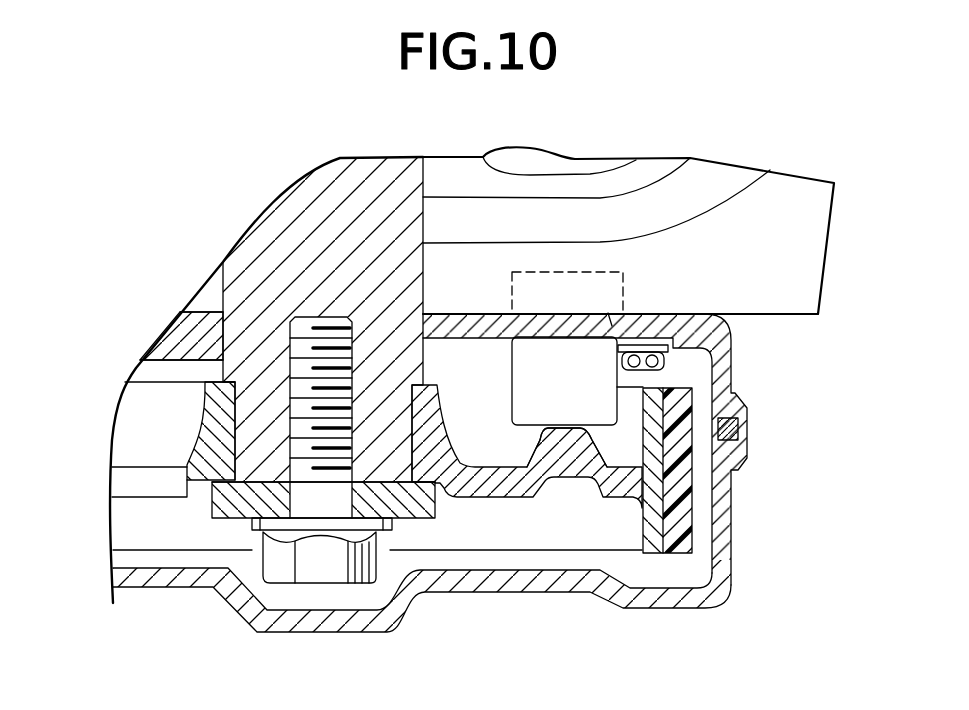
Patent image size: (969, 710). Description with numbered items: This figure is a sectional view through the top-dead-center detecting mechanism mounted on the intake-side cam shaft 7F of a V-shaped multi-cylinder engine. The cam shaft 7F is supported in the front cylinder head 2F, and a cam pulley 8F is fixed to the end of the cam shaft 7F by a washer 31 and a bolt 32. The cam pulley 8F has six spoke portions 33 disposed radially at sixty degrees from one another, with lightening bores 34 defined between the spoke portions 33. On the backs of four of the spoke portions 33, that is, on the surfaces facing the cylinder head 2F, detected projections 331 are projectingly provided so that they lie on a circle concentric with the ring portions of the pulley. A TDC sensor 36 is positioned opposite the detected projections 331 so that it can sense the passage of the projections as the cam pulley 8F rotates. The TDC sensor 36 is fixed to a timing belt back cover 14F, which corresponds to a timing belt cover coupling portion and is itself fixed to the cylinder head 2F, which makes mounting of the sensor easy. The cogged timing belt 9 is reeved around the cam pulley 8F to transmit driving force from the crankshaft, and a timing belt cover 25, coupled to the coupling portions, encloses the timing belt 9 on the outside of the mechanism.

The front cylinder head 2F is at (762, 303).
The cam shaft 7F is at (395, 274).
The cam pulley 8F is at (652, 565).
The timing belt 9 is at (682, 502).
The timing belt back cover 14F is at (727, 395).
The timing belt cover 25 is at (723, 553).
The washer 31 is at (423, 503).
The bolt 32 is at (323, 568).
The spoke portion 33 is at (503, 488).
The detected projection 331 is at (540, 446).
The lightening bore 34 is at (185, 481).
The TDC sensor 36 is at (582, 394).